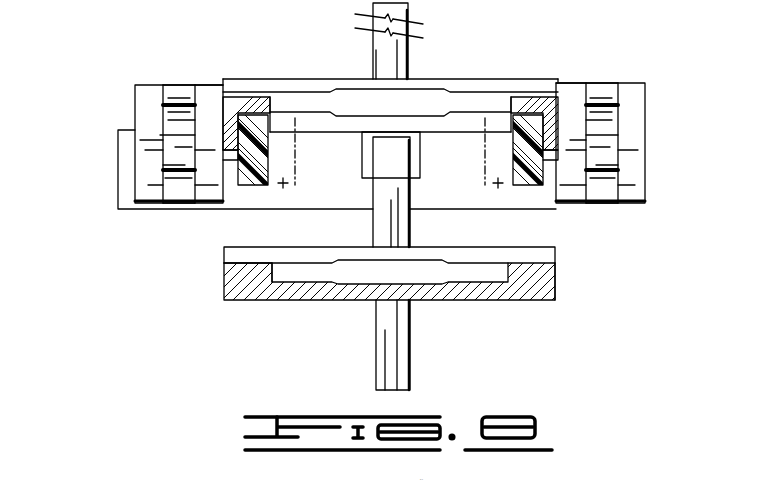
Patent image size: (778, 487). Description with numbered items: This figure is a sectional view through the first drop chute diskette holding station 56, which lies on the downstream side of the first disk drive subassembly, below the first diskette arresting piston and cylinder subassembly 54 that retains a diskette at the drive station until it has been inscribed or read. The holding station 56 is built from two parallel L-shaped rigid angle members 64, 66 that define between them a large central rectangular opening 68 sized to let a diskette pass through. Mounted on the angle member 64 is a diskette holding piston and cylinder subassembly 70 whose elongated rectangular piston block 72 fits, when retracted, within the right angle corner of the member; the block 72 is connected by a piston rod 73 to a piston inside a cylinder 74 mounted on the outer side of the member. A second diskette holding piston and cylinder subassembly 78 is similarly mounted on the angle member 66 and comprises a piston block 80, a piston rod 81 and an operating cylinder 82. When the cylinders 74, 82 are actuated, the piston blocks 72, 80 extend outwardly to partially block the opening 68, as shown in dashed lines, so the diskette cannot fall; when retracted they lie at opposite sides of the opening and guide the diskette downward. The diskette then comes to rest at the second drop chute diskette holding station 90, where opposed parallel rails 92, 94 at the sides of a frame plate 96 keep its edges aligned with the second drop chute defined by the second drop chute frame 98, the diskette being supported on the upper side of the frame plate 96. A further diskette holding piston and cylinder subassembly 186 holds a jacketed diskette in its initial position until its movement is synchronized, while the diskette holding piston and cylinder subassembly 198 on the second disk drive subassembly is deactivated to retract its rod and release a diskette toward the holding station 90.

The first diskette arresting piston and cylinder subassembly 54 is at (373, 18).
The first drop chute diskette holding station 56 is at (457, 45).
The L-shaped rigid angle member 64 is at (262, 98).
The L-shaped rigid angle member 66 is at (507, 98).
The central rectangular opening 68 is at (286, 108).
The diskette holding piston and cylinder subassembly 70 is at (122, 84).
The piston block 72 is at (258, 195).
The piston rod 73 is at (221, 84).
The cylinder 74 is at (172, 123).
The second diskette holding piston and cylinder subassembly 78 is at (648, 182).
The piston block 80 is at (497, 187).
The piston rod 81 is at (547, 97).
The operating cylinder 82 is at (605, 130).
The second drop chute diskette holding station 90 is at (213, 308).
The rail 92 is at (550, 283).
The rail 94 is at (232, 283).
The frame plate 96 is at (470, 292).
The second drop chute frame 98 is at (554, 305).
The diskette holding piston and cylinder subassembly 186 is at (370, 352).
The diskette holding piston and cylinder subassembly 198 is at (385, 210).